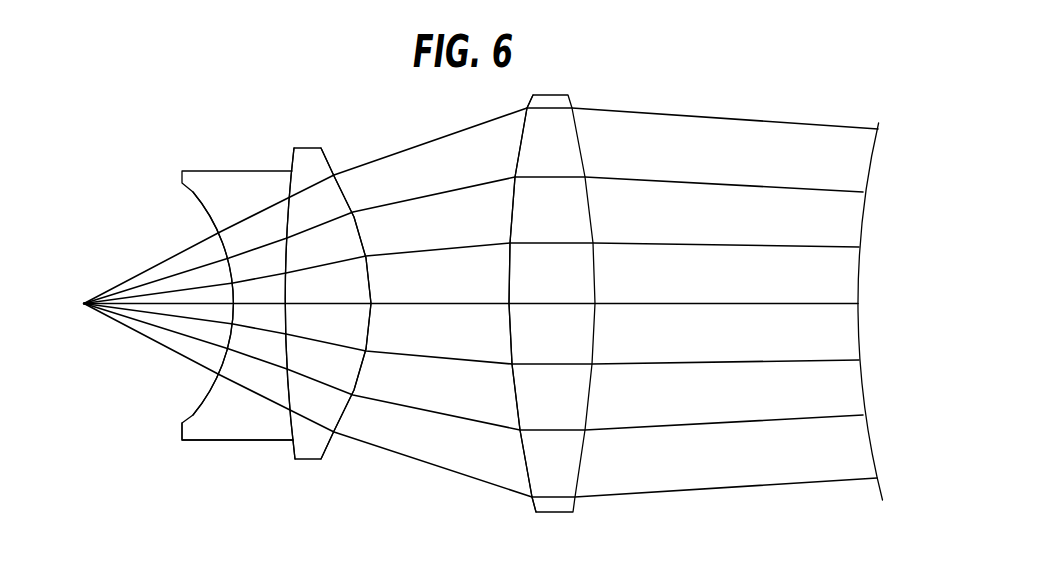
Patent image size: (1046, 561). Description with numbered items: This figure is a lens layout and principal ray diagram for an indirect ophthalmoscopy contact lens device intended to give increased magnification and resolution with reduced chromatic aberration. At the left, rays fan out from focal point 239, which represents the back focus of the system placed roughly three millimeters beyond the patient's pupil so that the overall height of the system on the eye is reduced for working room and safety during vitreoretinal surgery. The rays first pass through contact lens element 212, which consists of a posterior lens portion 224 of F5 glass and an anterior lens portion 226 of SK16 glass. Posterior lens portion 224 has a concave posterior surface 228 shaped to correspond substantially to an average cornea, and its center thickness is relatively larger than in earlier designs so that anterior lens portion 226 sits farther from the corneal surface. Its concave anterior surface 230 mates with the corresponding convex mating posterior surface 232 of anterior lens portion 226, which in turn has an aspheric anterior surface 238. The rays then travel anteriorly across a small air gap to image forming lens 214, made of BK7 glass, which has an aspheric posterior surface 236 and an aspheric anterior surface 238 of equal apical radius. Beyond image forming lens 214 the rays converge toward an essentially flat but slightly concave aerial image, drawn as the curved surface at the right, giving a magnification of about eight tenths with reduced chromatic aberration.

The contact lens element 212 is at (243, 137).
The image forming lens 214 is at (570, 408).
The posterior lens portion 224 is at (215, 183).
The anterior lens portion 226 is at (315, 168).
The concave posterior surface 228 is at (208, 220).
The anterior surface 230 is at (293, 428).
The mating posterior surface 232 is at (291, 422).
The posterior surface 236 is at (523, 462).
The anterior surface 238 is at (345, 418).
The focal point 239 is at (83, 304).